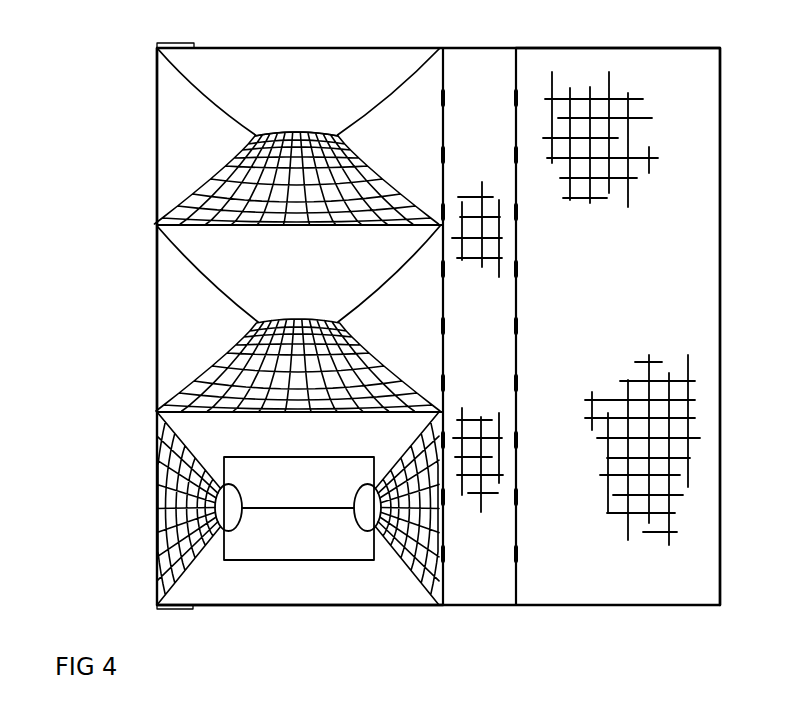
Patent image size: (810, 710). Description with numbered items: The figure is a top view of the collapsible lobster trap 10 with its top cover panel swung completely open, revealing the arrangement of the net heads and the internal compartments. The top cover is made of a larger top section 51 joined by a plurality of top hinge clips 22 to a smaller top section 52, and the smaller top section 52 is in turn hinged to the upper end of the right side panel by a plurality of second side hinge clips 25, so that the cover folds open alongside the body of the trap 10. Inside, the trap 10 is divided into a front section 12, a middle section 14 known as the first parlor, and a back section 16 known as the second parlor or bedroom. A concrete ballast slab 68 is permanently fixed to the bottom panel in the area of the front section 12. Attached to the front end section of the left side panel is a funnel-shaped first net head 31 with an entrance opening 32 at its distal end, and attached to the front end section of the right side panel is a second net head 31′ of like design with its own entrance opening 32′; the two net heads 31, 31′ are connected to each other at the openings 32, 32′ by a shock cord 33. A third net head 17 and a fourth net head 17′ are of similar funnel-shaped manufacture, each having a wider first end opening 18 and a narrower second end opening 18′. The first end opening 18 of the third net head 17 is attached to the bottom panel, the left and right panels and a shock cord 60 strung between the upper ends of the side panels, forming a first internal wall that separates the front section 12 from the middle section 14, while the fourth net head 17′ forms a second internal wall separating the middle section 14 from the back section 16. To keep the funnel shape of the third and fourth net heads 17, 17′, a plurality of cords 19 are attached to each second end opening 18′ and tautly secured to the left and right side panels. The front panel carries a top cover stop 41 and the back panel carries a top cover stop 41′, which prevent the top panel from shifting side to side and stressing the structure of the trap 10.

The collapsible lobster trap 10 is at (125, 44).
The front section 12 is at (313, 592).
The middle section 14 is at (157, 311).
The back section 16 is at (157, 137).
The third net head 17 is at (366, 367).
The fourth net head 17′ is at (355, 171).
The first end opening 18 is at (284, 227).
The second end opening 18′ is at (297, 130).
The cords 19 is at (197, 89).
The top hinge clips 22 is at (516, 212).
The second side hinge clips 25 is at (443, 98).
The first net head 31 is at (190, 563).
The second net head 31′ is at (398, 456).
The entrance opening 32 is at (242, 497).
The entrance opening 32′ is at (354, 496).
The shock cord 33 is at (311, 509).
The top cover stop 41 is at (187, 609).
The top cover stop 41′ is at (175, 43).
The larger top section 51 is at (634, 50).
The smaller top section 52 is at (487, 53).
The shock cord 60 is at (282, 413).
The concrete ballast slab 68 is at (332, 561).